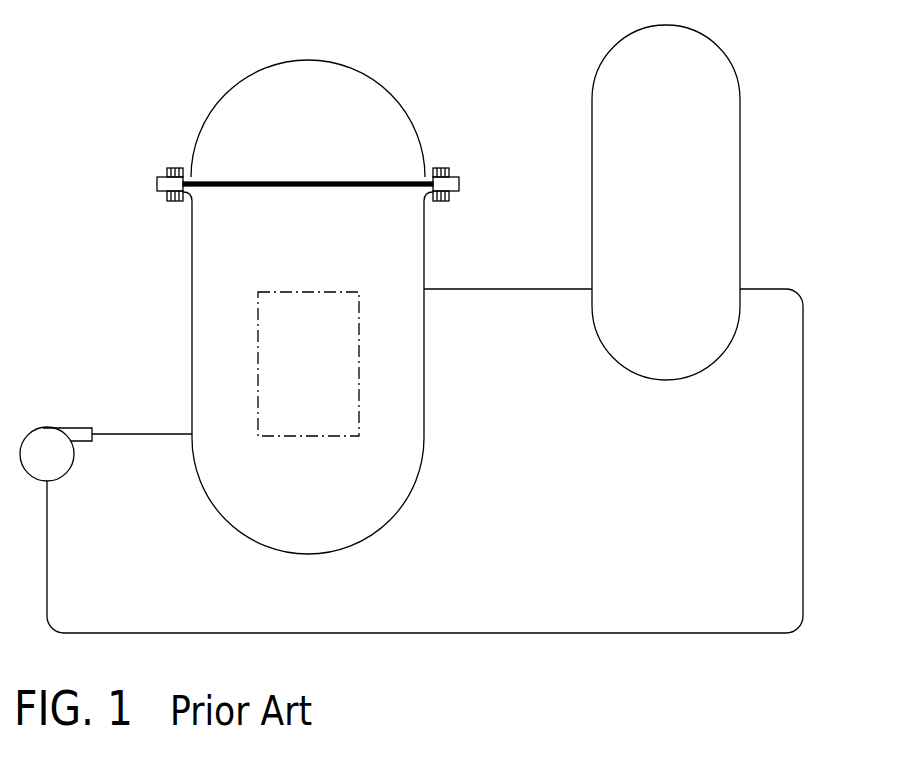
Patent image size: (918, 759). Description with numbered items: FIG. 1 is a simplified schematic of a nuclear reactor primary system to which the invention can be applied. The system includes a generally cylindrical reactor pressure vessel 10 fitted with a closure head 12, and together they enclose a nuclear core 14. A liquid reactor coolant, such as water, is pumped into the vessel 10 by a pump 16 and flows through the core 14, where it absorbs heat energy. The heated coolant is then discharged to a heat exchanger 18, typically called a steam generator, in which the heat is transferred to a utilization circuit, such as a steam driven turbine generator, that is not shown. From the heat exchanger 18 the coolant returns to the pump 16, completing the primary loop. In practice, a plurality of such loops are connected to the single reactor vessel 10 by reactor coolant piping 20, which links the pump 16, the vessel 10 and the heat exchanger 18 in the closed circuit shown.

The reactor pressure vessel 10 is at (322, 373).
The closure head 12 is at (205, 123).
The nuclear core 14 is at (257, 350).
The pump 16 is at (43, 427).
The heat exchanger 18 is at (740, 137).
The reactor coolant piping 20 is at (803, 559).